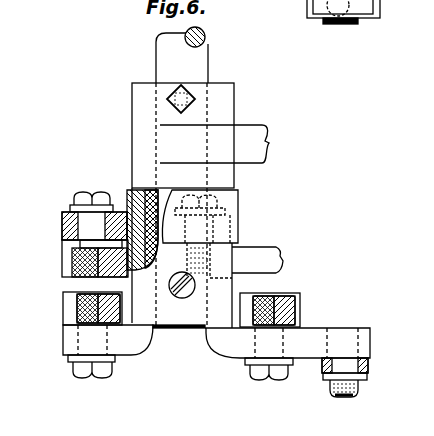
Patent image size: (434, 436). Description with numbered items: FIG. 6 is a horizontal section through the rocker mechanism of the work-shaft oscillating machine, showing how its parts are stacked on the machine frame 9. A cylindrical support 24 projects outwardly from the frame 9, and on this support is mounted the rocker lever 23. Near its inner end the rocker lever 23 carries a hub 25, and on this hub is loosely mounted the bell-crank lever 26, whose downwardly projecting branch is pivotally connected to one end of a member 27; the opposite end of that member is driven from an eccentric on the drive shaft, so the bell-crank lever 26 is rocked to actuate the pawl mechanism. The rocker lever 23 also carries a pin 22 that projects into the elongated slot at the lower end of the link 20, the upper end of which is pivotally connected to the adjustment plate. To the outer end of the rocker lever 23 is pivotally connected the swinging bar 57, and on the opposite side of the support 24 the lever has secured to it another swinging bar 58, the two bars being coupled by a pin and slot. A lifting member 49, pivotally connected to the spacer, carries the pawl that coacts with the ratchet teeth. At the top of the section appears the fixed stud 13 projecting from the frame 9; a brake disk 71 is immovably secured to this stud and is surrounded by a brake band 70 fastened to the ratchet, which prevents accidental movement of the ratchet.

The machine frame 9 is at (268, 143).
The fixed stud 13 is at (341, 27).
The link 20 is at (370, 368).
The pin 22 is at (350, 398).
The rocker lever 23 is at (133, 350).
The cylindrical support 24 is at (202, 61).
The hub 25 is at (128, 192).
The bell-crank lever 26 is at (62, 229).
The member 27 is at (268, 253).
The lifting member 49 is at (72, 262).
The swinging bar 57 is at (77, 305).
The swinging bar 58 is at (293, 312).
The brake band 70 is at (359, 11).
The brake disk 71 is at (313, 11).